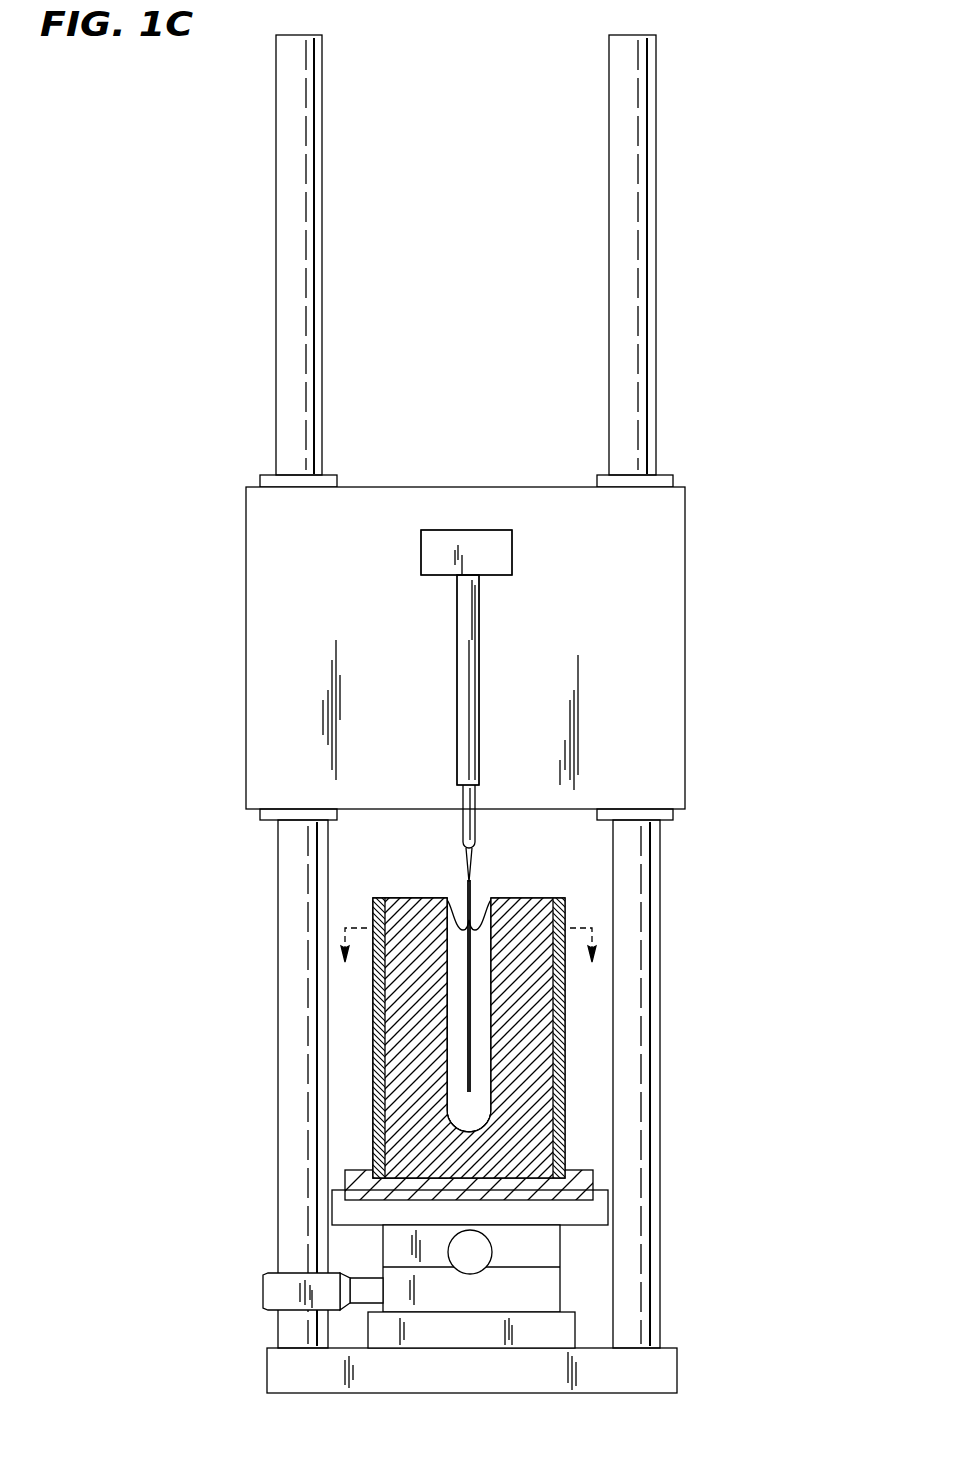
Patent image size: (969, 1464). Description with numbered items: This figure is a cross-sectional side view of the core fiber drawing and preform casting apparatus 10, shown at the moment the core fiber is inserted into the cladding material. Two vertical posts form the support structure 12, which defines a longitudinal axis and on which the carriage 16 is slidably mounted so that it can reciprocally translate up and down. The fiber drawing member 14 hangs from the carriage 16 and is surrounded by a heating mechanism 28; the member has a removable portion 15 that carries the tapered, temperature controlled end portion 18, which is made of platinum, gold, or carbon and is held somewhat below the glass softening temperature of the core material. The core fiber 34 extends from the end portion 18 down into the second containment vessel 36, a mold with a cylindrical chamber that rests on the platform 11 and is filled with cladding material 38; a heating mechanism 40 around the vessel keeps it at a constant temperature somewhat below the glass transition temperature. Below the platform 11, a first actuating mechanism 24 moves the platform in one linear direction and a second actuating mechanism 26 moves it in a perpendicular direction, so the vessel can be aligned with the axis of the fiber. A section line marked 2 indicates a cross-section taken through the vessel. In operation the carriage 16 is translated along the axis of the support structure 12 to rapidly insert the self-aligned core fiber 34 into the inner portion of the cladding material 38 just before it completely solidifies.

The apparatus 10 is at (732, 87).
The platform 11 is at (560, 1195).
The support structure 12 is at (276, 246).
The fiber drawing member 14 is at (483, 676).
The removable portion 15 is at (475, 821).
The carriage 16 is at (668, 681).
The end portion 18 is at (466, 870).
The first actuating mechanism 24 is at (476, 1272).
The second actuating mechanism 26 is at (283, 1290).
The heating mechanism 28 is at (468, 636).
The core fiber 34 is at (481, 896).
The second containment vessel 36 is at (544, 1071).
The cladding material 38 is at (473, 1111).
The heating mechanism 40 is at (373, 1057).
The section line 2- 2 is at (471, 927).